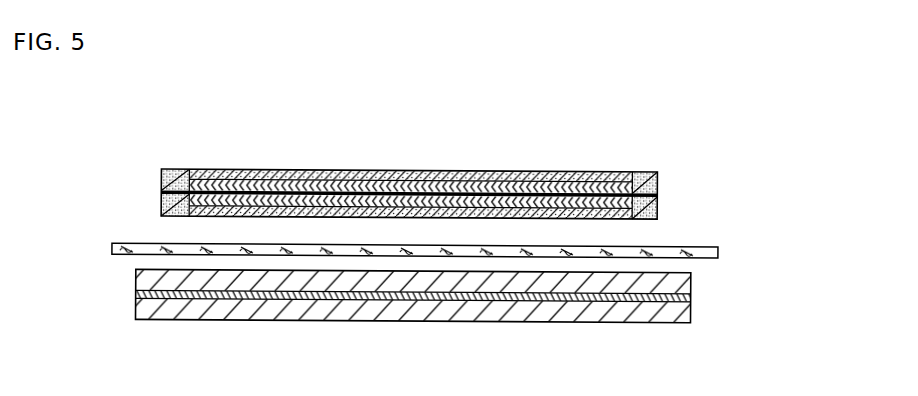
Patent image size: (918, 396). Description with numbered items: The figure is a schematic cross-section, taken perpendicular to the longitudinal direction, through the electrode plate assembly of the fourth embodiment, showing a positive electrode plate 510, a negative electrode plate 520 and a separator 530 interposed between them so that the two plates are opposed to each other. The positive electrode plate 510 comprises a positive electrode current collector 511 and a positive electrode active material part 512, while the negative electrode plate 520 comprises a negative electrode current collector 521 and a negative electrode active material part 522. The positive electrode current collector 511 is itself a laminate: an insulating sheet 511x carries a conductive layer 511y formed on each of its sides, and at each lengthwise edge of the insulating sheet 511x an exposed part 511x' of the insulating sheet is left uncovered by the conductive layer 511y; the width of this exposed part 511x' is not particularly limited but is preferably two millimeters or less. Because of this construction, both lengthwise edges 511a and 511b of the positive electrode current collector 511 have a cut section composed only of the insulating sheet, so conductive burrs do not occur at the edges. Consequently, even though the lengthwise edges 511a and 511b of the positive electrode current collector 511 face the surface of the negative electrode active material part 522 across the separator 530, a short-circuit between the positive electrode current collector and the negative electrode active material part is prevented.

The positive electrode plate 510 is at (522, 170).
The positive electrode current collector 511 is at (750, 190).
The lengthwise edge of the positive electrode current collector 511a is at (160, 191).
The lengthwise edge of the positive electrode current collector 511b is at (659, 191).
The insulating sheet 511x is at (471, 213).
The exposed part of the insulating sheet 511x' is at (415, 155).
The conductive layer 511y is at (610, 210).
The positive electrode active material part 512 is at (373, 200).
The negative electrode plate 520 is at (515, 323).
The negative electrode current collector 521 is at (240, 292).
The negative electrode active material part 522 is at (347, 282).
The separator 530 is at (699, 257).